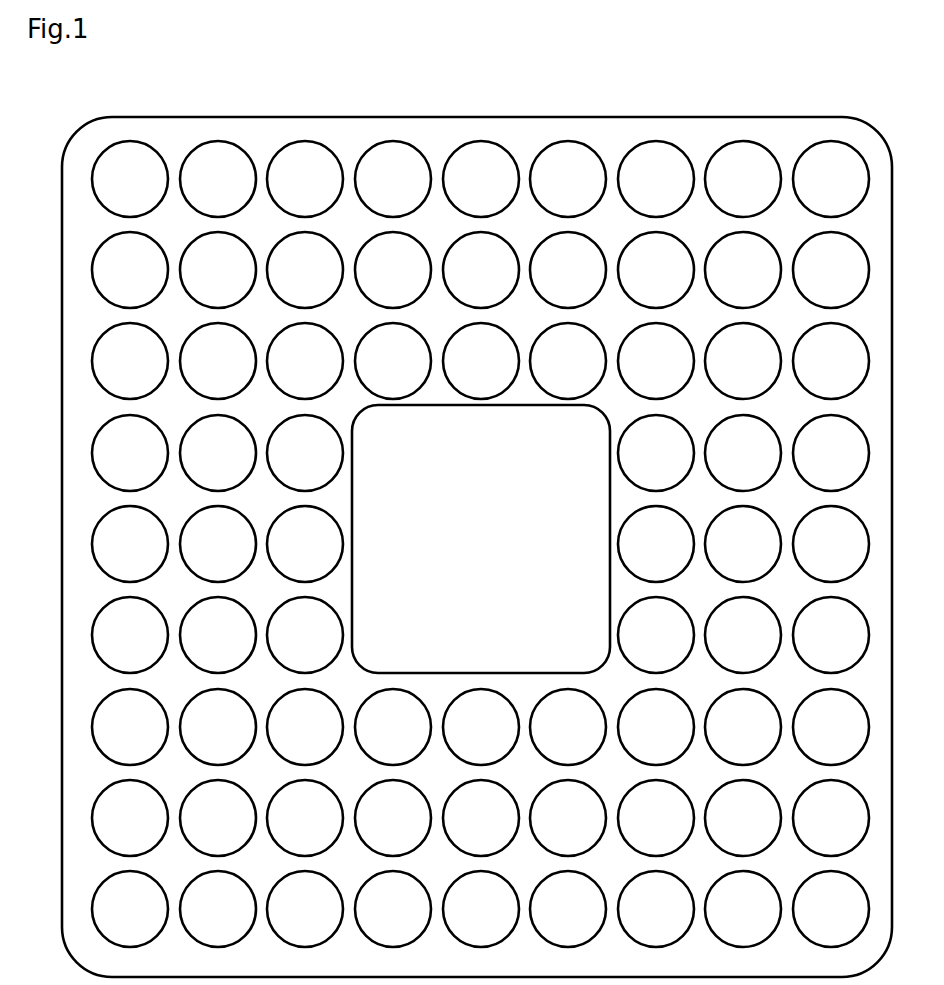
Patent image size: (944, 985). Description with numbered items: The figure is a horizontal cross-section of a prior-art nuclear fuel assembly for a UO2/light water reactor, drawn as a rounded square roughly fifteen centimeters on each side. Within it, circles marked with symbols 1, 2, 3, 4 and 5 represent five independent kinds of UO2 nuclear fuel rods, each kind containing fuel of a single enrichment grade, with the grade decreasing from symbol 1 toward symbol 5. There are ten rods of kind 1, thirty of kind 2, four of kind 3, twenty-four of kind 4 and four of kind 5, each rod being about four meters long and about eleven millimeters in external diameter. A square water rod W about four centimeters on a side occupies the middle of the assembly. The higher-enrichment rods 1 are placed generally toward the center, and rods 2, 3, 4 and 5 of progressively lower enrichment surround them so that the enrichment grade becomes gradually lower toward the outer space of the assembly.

The UO2 nuclear fuel rod of the first kind 1 is at (480, 544).
The UO2 nuclear fuel rod of the second kind 2 is at (480, 544).
The UO2 nuclear fuel rod of the third kind 3 is at (480, 544).
The UO2 nuclear fuel rod of the fourth kind 4 is at (480, 544).
The UO2 nuclear fuel rod of the fifth kind 5 is at (480, 544).
The water rod W is at (481, 539).